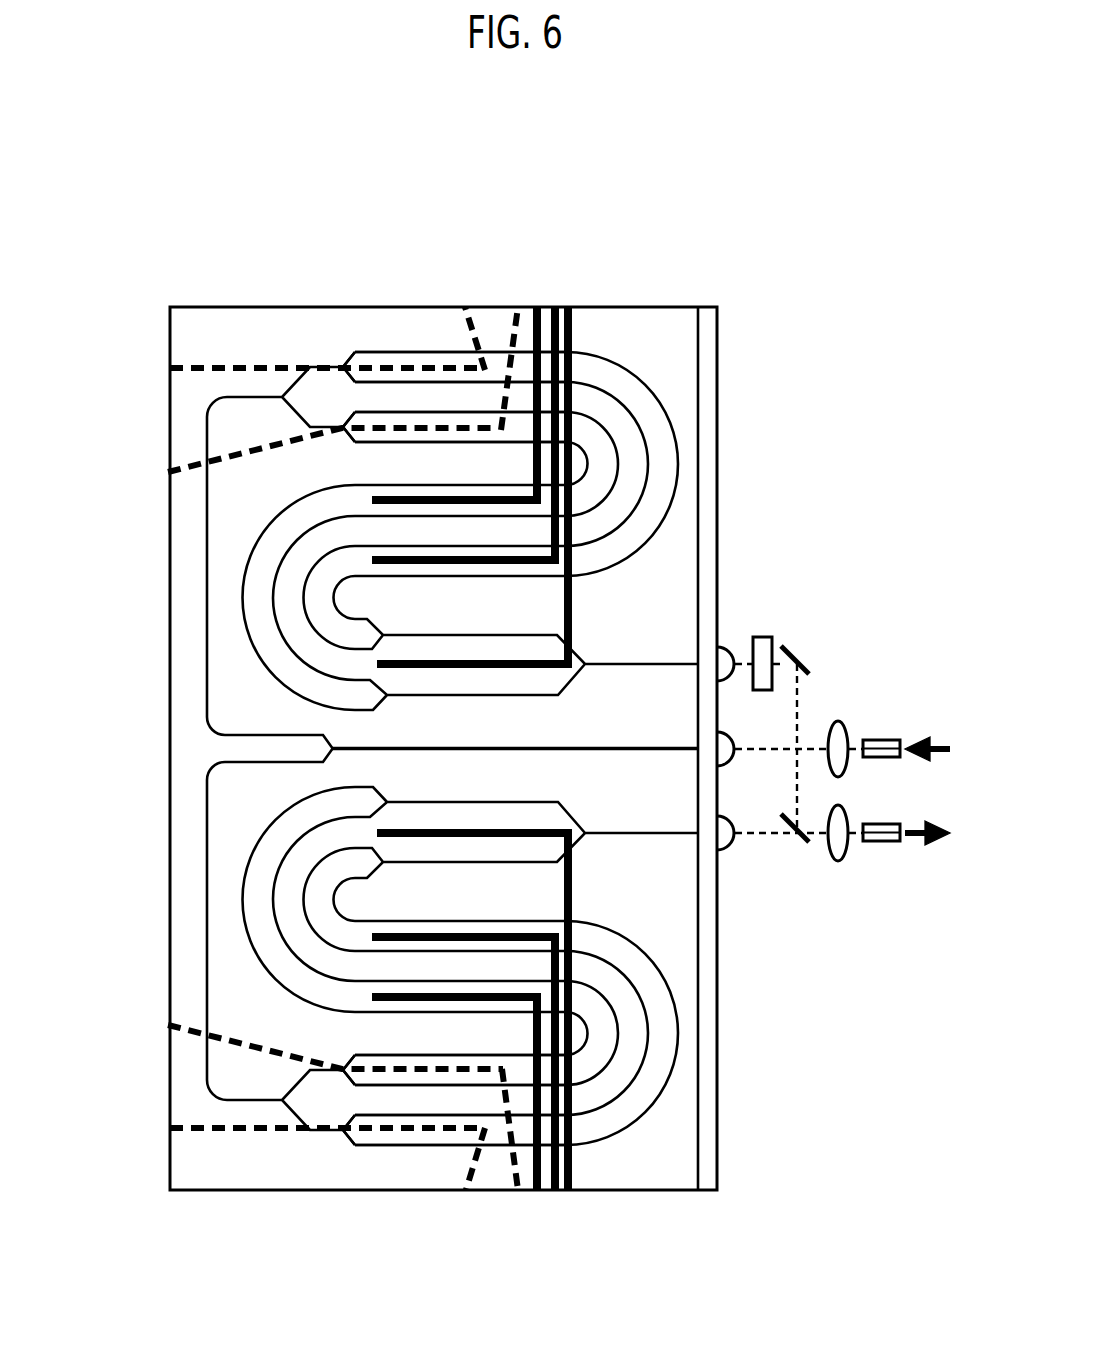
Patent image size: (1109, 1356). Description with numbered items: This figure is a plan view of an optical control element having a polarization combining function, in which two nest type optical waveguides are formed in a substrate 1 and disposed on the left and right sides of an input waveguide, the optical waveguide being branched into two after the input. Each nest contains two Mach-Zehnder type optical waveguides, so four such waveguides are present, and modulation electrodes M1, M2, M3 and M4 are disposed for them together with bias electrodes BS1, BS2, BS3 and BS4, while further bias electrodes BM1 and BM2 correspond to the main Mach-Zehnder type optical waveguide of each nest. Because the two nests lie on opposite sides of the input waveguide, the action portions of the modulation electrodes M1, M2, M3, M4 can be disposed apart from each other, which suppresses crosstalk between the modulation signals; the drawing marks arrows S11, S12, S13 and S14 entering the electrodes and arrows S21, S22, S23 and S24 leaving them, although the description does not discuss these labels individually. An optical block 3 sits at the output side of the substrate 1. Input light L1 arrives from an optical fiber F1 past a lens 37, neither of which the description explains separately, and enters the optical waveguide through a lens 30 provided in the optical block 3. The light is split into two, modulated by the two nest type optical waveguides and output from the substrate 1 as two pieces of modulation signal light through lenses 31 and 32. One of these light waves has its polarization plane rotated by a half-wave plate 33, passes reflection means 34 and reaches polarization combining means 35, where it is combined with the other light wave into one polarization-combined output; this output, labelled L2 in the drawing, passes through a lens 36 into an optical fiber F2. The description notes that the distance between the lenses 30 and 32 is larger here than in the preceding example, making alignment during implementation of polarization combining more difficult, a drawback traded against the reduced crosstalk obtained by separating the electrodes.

The substrate 1 is at (222, 307).
The optical block 3 is at (703, 307).
The modulation electrode M1 is at (362, 362).
The modulation electrode M2 is at (407, 423).
The modulation electrode M3 is at (410, 1072).
The modulation electrode M4 is at (367, 1133).
The input signal light S11 is at (140, 356).
The input signal light S12 is at (140, 459).
The input signal light S13 is at (140, 1013).
The input signal light S14 is at (140, 1116).
The output signal light S21 is at (465, 307).
The output signal light S22 is at (518, 307).
The output signal light S23 is at (518, 1190).
The output signal light S24 is at (466, 1190).
The bias electrode BS1 is at (480, 557).
The bias electrode BS2 is at (482, 493).
The bias electrode BS3 is at (483, 1000).
The bias electrode BS4 is at (505, 942).
The bias electrode BM1 is at (490, 662).
The bias electrode BM2 is at (477, 838).
The lens 30 is at (735, 760).
The lens 31 is at (725, 645).
The lens 32 is at (733, 848).
The half-wave plate 33 is at (757, 635).
The reflection means 34 is at (804, 658).
The polarization combining means 35 is at (800, 848).
The lens 36 is at (840, 861).
The lens 37 is at (840, 721).
The optical fiber F1 is at (888, 740).
The optical fiber F2 is at (885, 841).
The input light L1 is at (944, 749).
The output light L2 is at (944, 833).